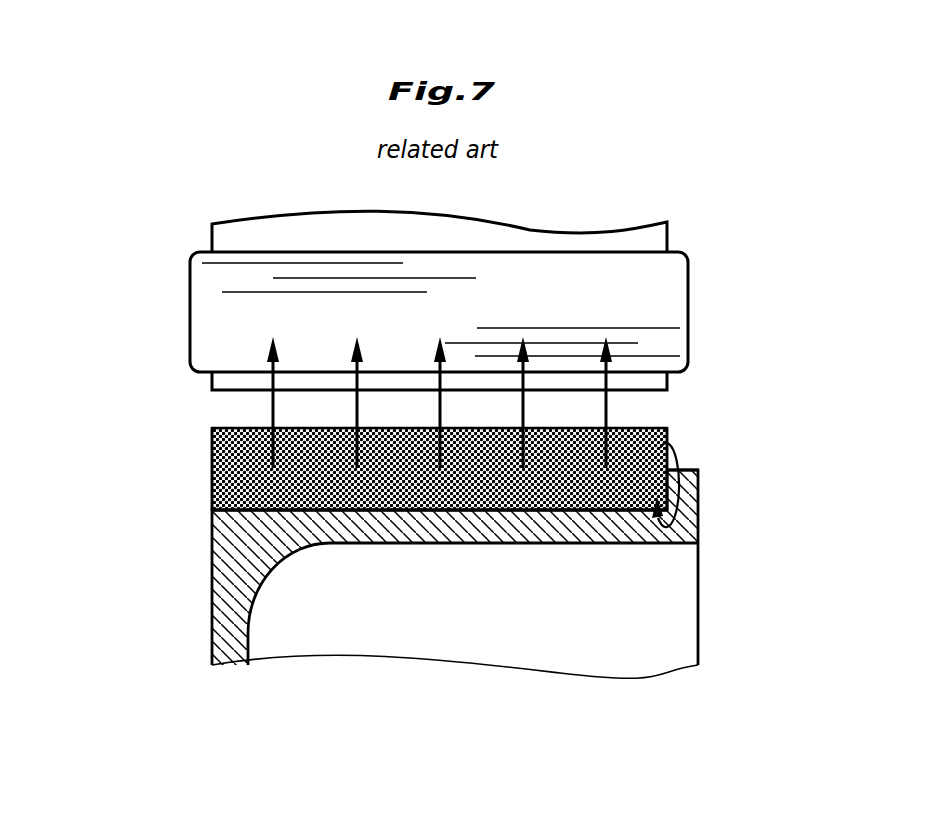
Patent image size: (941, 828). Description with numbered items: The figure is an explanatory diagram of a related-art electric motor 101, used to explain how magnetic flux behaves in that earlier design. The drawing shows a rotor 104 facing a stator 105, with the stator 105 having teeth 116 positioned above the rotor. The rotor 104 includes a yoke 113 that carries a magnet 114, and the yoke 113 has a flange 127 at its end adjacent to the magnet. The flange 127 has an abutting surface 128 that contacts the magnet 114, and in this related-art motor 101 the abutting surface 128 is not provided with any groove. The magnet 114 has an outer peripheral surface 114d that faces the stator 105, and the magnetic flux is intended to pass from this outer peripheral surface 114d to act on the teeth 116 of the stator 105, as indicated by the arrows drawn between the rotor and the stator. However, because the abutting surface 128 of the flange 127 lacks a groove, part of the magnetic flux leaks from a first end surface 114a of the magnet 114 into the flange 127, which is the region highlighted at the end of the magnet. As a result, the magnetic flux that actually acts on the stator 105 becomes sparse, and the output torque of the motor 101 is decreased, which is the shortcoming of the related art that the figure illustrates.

The electric motor 101 is at (755, 405).
The rotor 104 is at (196, 613).
The stator 105 is at (700, 312).
The yoke 113 is at (465, 525).
The magnet 114 is at (575, 487).
The first end surface 114a is at (667, 433).
The outer peripheral surface 114d is at (231, 428).
The teeth 116 is at (640, 384).
The flange 127 is at (695, 502).
The abutting surface 128 is at (663, 488).